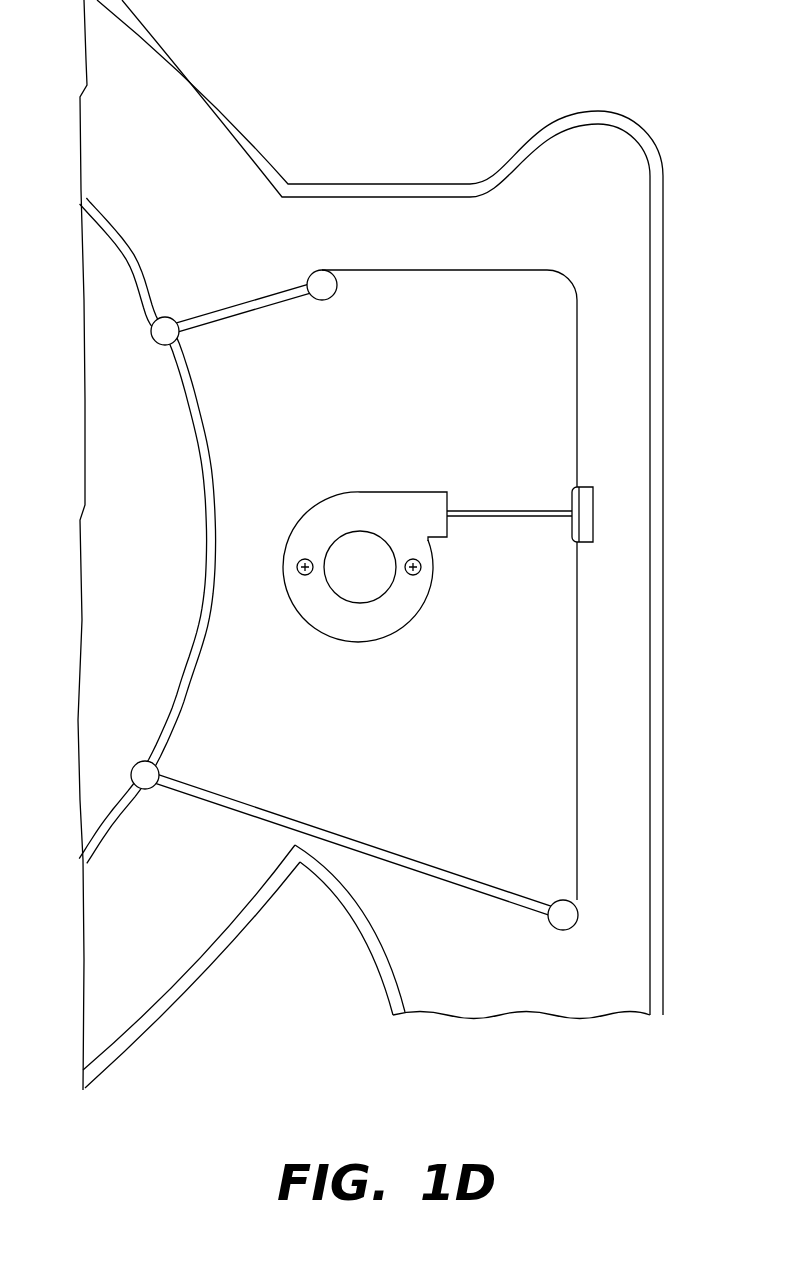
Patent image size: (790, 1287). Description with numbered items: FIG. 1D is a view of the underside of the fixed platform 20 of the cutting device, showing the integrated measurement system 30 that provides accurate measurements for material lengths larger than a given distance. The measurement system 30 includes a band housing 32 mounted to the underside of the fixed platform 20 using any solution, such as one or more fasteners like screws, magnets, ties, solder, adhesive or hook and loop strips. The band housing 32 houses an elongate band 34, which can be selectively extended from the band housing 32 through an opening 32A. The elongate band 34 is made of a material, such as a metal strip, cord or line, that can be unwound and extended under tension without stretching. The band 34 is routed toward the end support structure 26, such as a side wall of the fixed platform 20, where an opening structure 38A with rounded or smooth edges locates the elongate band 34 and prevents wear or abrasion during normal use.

The fixed platform 20 is at (338, 384).
The end support structure 26 is at (599, 614).
The integrated measurement system 30 is at (489, 362).
The band housing 32 is at (358, 497).
The opening 32A is at (447, 511).
The elongate band 34 is at (522, 511).
The opening structure 38A is at (592, 512).